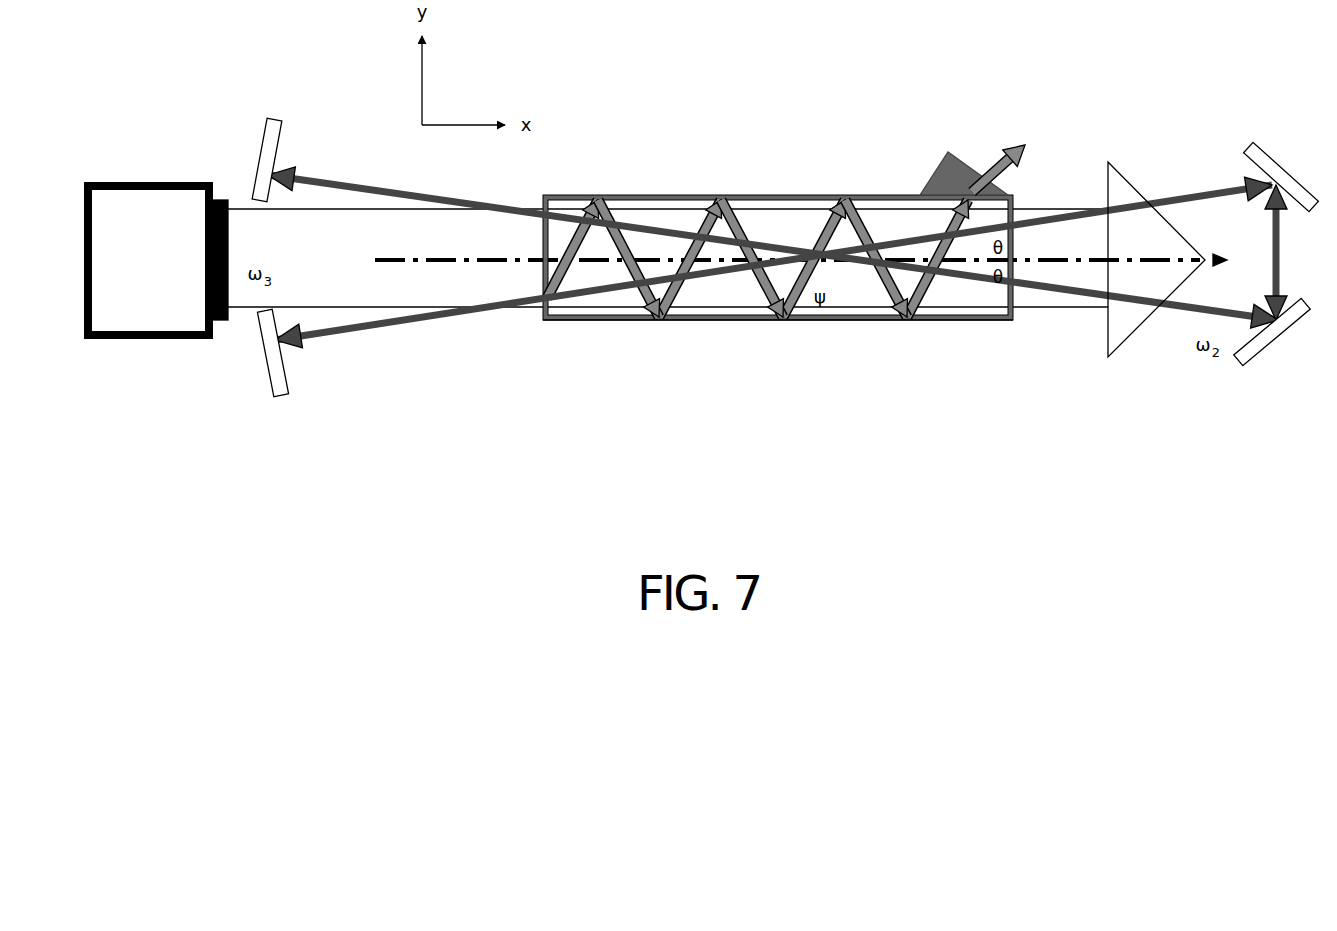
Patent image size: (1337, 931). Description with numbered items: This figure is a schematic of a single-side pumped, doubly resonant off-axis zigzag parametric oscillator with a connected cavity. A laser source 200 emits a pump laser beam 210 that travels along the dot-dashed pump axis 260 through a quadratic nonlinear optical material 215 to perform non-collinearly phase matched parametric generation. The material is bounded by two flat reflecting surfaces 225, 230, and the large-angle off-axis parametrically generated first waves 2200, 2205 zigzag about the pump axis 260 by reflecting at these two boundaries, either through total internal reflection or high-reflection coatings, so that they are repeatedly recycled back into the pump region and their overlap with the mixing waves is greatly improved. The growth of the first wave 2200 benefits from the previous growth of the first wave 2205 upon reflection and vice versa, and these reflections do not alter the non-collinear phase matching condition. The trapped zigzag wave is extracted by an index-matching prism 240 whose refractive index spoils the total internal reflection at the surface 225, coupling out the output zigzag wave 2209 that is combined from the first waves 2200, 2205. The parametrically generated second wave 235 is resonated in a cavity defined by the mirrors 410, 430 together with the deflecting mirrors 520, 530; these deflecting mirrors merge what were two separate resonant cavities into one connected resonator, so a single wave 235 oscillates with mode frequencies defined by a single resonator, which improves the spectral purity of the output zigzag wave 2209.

The laser source 200 is at (158, 260).
The pump laser beam 210 is at (247, 308).
The quadratic nonlinear optical material 215 is at (620, 298).
The flat reflecting surface 225 is at (772, 190).
The flat reflecting surface 230 is at (843, 323).
The parametrically generated second wave 235 is at (1210, 183).
The index-matching prism 240 is at (922, 167).
The pump axis 260 is at (774, 260).
The mirror 410 is at (287, 133).
The mirror 430 is at (293, 380).
The deflecting mirror 520 is at (1280, 343).
The deflecting mirror 530 is at (1267, 142).
The parametrically generated first wave 2200 is at (703, 229).
The parametrically generated first wave 2205 is at (760, 288).
The output zigzag wave 2209 is at (1028, 162).